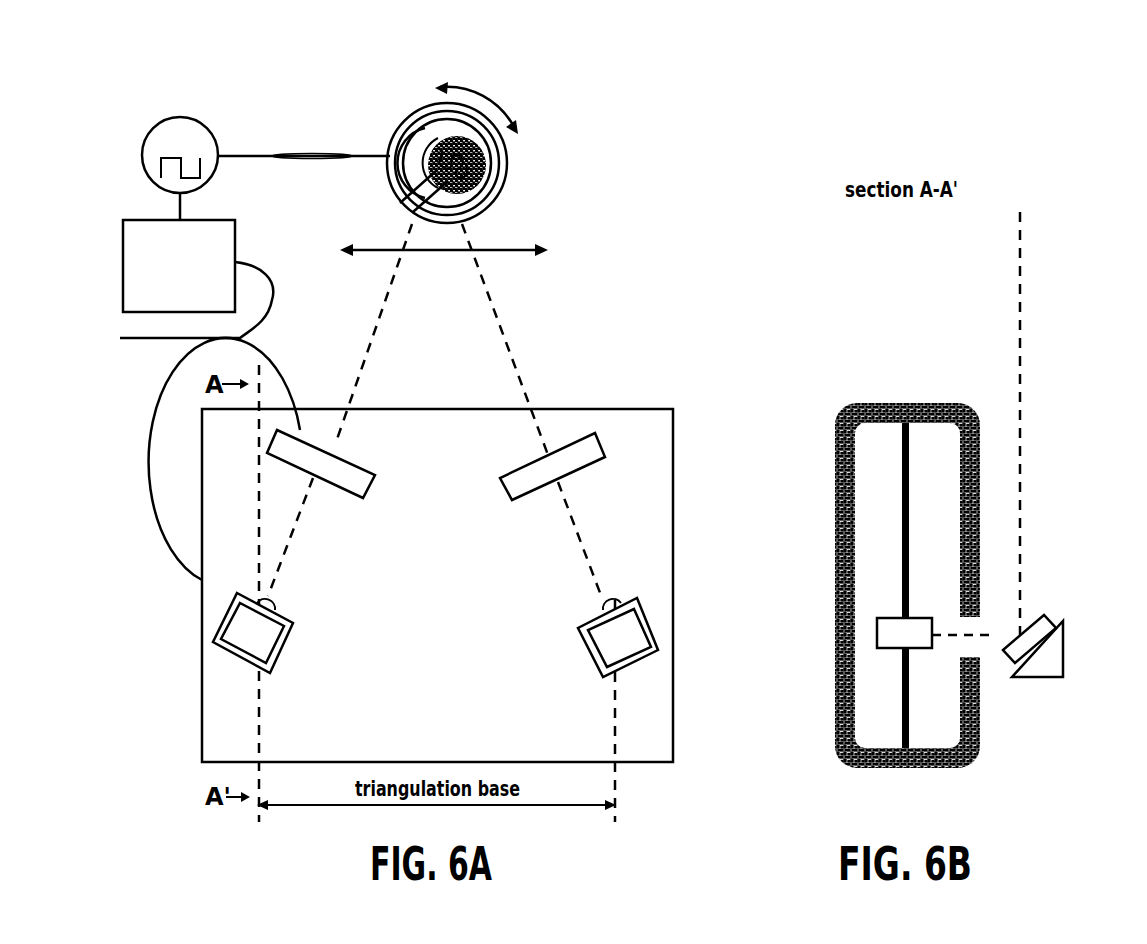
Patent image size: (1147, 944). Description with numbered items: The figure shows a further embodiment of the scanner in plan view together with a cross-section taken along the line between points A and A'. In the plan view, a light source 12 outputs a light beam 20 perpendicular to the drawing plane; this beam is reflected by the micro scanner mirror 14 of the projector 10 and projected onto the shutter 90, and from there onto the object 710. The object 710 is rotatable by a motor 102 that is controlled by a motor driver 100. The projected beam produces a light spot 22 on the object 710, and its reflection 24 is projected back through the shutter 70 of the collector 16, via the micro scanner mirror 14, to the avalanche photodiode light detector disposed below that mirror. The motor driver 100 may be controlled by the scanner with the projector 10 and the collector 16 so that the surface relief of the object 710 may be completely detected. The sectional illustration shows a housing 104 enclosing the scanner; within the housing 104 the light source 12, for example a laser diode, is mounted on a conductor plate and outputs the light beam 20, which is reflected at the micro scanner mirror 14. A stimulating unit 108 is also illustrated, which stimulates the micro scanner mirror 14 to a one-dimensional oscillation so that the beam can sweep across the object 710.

In FIG. 6A, the projector 10 is at (230, 708).
In FIG. 6A, the light source 12 is at (258, 597).
In FIG. 6B, the light source 12 is at (877, 635).
In FIG. 6A, the micro scanner mirror 14 is at (218, 652).
In FIG. 6B, the micro scanner mirror 14 is at (650, 652).
In FIG. 6A, the collector 16 is at (650, 680).
In FIG. 6A, the light beam 20 is at (393, 224).
In FIG. 6B, the light beam 20 is at (1020, 589).
In FIG. 6A, the light spot 22 is at (478, 176).
In FIG. 6A, the reflection 24 is at (497, 318).
In FIG. 6A, the shutter 70 is at (570, 452).
In FIG. 6A, the shutter 90 is at (196, 421).
In FIG. 6A, the motor driver 100 is at (123, 250).
In FIG. 6A, the motor 102 is at (155, 125).
In FIG. 6A, the housing 104 is at (842, 406).
In FIG. 6B, the housing 104 is at (909, 585).
In FIG. 6B, the stimulating unit 108 is at (1055, 657).
In FIG. 6A, the object 710 is at (435, 128).